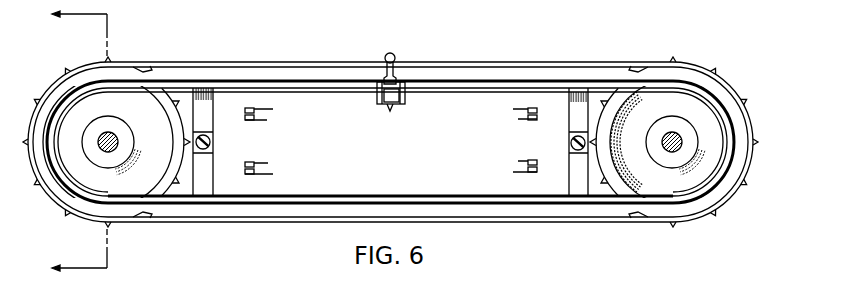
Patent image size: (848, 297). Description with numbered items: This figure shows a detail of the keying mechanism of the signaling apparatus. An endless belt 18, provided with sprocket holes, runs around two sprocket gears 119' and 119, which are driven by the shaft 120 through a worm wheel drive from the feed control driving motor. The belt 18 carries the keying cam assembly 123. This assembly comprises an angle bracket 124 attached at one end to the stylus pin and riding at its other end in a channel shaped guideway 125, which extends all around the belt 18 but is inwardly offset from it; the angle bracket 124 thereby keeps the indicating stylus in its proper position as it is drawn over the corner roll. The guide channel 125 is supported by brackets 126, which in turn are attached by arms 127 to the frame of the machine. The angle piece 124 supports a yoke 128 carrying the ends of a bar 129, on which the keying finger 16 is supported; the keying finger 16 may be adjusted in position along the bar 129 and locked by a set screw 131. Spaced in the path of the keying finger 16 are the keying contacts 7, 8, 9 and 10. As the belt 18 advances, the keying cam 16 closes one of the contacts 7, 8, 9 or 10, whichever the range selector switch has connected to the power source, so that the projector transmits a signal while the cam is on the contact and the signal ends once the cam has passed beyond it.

The keying contact 7 is at (538, 115).
The keying contact 8 is at (244, 115).
The keying contact 9 is at (244, 170).
The keying contact 10 is at (538, 170).
The keying cam 16 is at (389, 112).
The endless belt 18 is at (527, 227).
The sprocket gear 119 is at (390, 162).
The sprocket gear 119' is at (123, 118).
The shaft 120 is at (678, 140).
The keying cam assembly 123 is at (403, 84).
The angle bracket 124 is at (386, 70).
The channel shaped guideway 125 is at (465, 86).
The bracket 126 is at (215, 128).
The arm 127 is at (192, 153).
The yoke 128 is at (376, 96).
The bar 129 is at (398, 102).
The set screw 131 is at (386, 106).